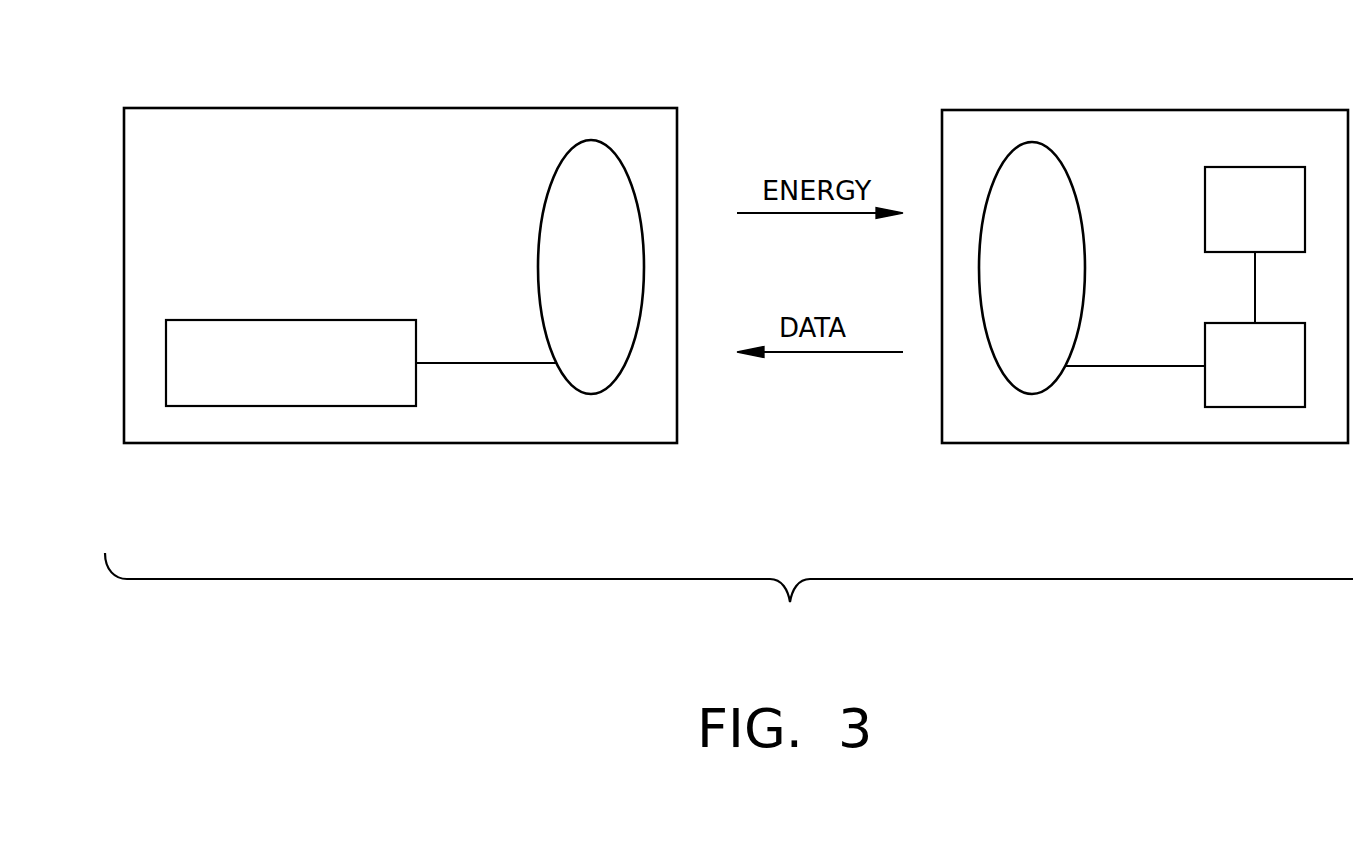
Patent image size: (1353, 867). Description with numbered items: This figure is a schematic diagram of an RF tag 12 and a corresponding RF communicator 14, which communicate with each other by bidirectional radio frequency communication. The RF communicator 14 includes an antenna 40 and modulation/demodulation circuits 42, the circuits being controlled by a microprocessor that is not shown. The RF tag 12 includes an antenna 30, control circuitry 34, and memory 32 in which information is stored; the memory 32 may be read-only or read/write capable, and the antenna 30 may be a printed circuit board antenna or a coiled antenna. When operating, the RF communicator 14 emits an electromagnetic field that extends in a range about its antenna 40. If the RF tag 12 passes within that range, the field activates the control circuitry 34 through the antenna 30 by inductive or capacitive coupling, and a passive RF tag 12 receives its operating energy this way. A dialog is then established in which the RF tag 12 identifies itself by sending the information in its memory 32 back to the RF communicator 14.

The RF tag 12 is at (1188, 110).
The RF communicator 14 is at (331, 108).
The antenna 30 is at (1055, 156).
The memory 32 is at (1263, 167).
The control circuitry 34 is at (1205, 390).
The antenna 40 is at (553, 177).
The modulation/demodulation circuits 42 is at (257, 320).